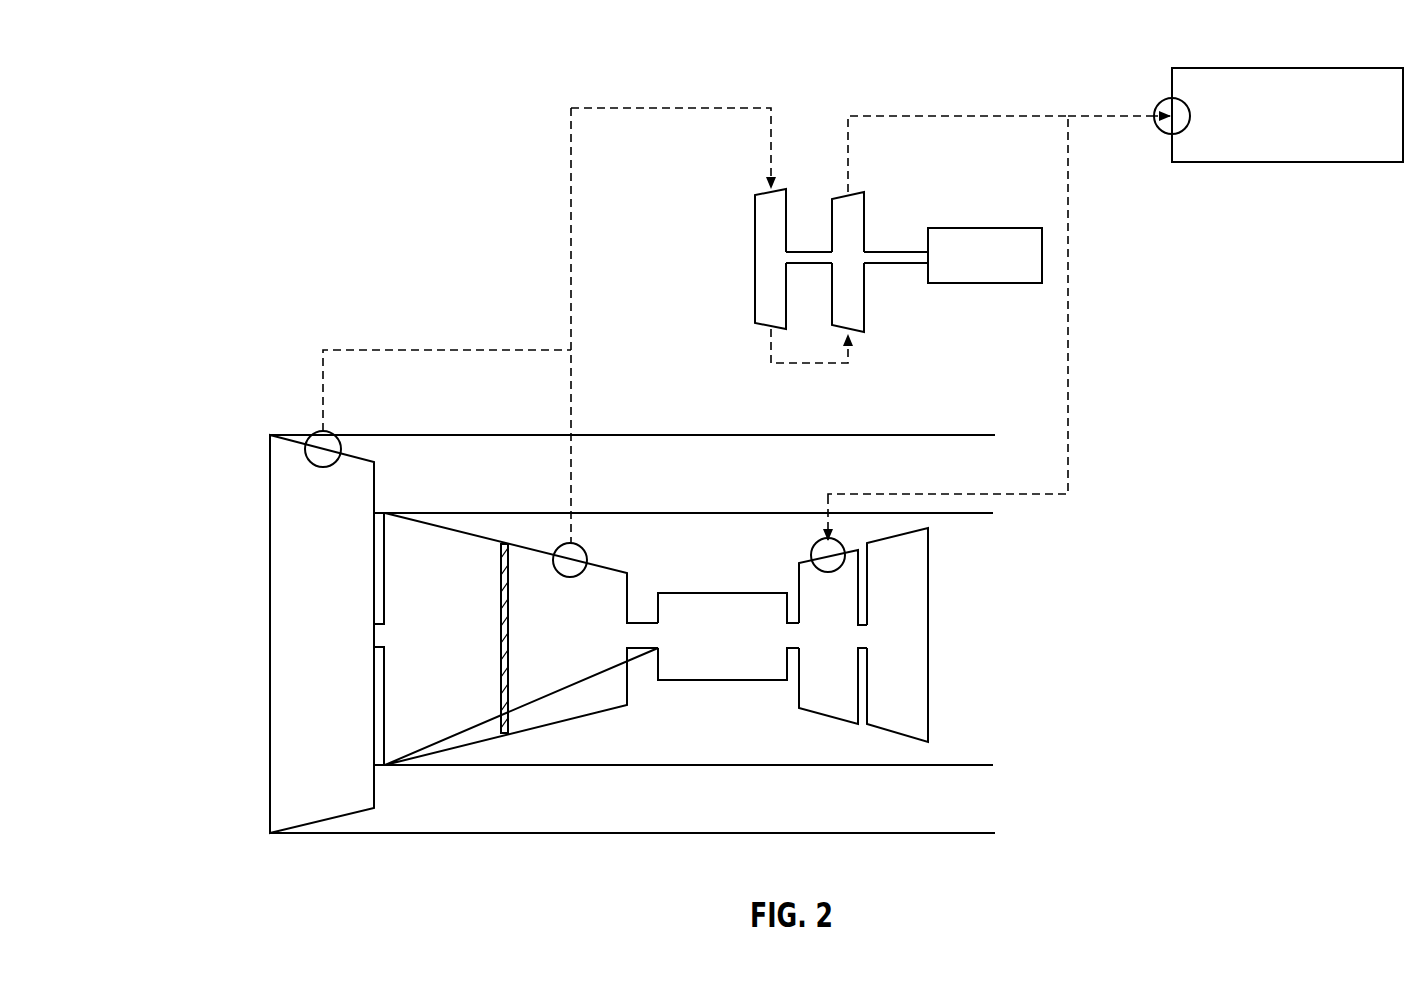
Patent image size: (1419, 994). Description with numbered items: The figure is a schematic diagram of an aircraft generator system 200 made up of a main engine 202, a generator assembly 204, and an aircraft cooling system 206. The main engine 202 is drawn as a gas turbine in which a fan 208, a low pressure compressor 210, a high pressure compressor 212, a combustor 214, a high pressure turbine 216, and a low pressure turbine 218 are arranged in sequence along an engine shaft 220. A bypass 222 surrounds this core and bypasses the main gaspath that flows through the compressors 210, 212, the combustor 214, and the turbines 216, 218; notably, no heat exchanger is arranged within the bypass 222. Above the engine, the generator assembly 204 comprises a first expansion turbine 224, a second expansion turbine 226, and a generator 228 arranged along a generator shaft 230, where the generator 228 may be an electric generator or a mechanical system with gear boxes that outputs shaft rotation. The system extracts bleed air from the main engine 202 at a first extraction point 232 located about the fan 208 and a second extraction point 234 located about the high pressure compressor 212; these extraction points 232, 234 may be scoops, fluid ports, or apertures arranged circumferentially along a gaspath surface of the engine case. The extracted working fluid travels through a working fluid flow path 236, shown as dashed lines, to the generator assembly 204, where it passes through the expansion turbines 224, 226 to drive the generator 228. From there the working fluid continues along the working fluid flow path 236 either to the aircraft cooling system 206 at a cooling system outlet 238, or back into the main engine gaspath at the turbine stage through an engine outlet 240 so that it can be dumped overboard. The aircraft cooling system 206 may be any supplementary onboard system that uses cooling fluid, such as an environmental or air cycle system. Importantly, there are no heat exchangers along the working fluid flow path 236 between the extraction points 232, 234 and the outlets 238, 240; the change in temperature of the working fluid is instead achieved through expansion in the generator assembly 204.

The aircraft generator system 200 is at (211, 66).
The main engine 202 is at (258, 616).
The generator assembly 204 is at (806, 138).
The aircraft cooling system 206 is at (1318, 50).
The fan 208 is at (295, 775).
The low pressure compressor 210 is at (430, 735).
The high pressure compressor 212 is at (528, 705).
The combustor 214 is at (724, 660).
The high pressure turbine 216 is at (832, 697).
The low pressure turbine 218 is at (904, 710).
The engine shaft 220 is at (637, 635).
The bypass 222 is at (887, 484).
The first expansion turbine 224 is at (766, 287).
The second expansion turbine 226 is at (850, 308).
The generator 228 is at (1032, 258).
The generator shaft 230 is at (893, 258).
The first extraction point 232 is at (308, 430).
The second extraction point 234 is at (587, 560).
The working fluid flow path 236 is at (568, 232).
The cooling system outlet 238 is at (1165, 100).
The engine outlet 240 is at (847, 563).